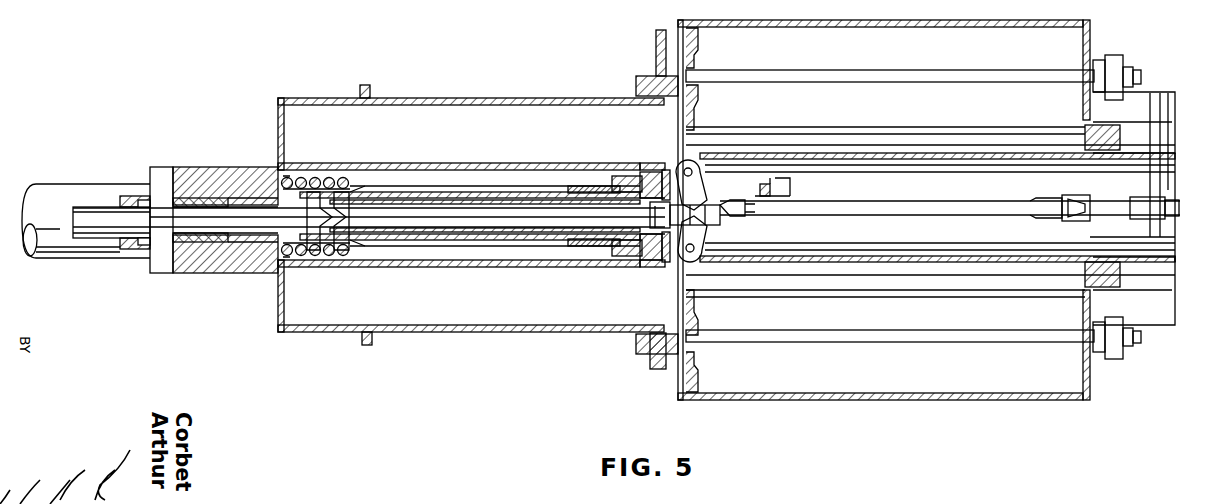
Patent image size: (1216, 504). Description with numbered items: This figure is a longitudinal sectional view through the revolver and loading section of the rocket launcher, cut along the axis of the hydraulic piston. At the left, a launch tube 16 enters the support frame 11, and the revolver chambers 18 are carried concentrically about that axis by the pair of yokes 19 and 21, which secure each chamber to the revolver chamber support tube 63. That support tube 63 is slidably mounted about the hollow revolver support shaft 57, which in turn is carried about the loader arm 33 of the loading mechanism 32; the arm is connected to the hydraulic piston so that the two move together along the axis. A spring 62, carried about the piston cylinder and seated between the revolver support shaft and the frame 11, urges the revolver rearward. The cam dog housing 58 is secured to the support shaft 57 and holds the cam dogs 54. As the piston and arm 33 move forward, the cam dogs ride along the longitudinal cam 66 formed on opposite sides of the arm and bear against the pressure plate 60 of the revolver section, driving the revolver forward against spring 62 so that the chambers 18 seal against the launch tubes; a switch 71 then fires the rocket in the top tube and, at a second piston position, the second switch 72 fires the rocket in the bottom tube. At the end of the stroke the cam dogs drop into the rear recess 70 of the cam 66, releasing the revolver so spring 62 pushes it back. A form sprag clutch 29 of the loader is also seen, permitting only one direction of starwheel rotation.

The launch tube 16 is at (62, 190).
The support frame 11 is at (230, 263).
The revolver chamber 18 is at (474, 98).
The yoke 19 is at (368, 340).
The spring 62 is at (324, 262).
The hollow revolver support shaft 57 is at (520, 198).
The revolver chamber support tube 63 is at (590, 186).
The pressure plate 60 is at (668, 244).
The cam dog housing 58 is at (736, 159).
The cam dog 54 is at (698, 238).
The second switch 72 is at (778, 195).
The loader arm 33 is at (832, 208).
The longitudinal cam 66 is at (850, 208).
The rear recess 70 is at (1038, 212).
The switch 71 is at (1093, 196).
The loading mechanism 32 is at (1156, 285).
The form sprag clutch 29 is at (1112, 360).
The yoke 21 is at (660, 364).